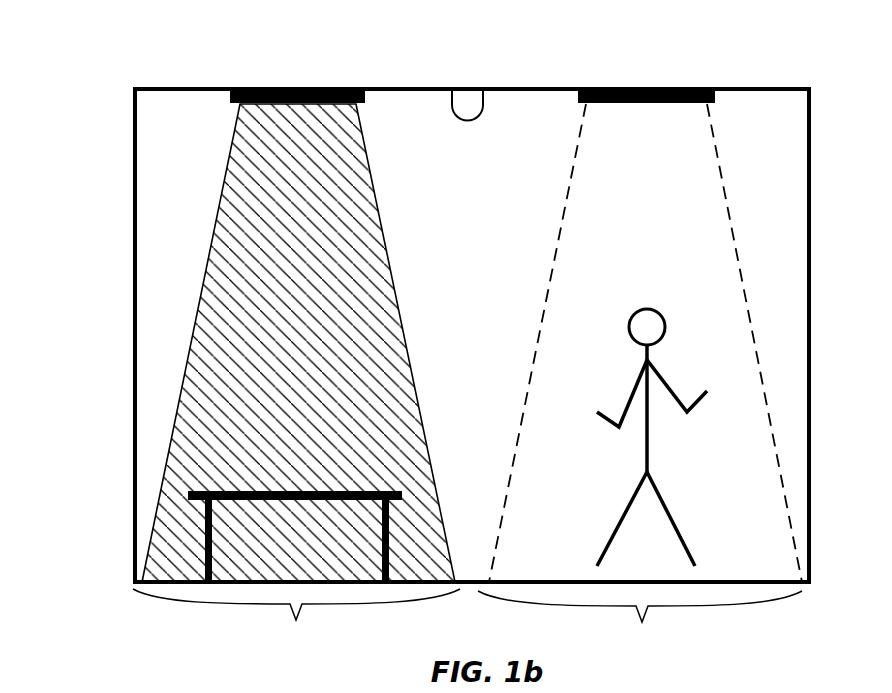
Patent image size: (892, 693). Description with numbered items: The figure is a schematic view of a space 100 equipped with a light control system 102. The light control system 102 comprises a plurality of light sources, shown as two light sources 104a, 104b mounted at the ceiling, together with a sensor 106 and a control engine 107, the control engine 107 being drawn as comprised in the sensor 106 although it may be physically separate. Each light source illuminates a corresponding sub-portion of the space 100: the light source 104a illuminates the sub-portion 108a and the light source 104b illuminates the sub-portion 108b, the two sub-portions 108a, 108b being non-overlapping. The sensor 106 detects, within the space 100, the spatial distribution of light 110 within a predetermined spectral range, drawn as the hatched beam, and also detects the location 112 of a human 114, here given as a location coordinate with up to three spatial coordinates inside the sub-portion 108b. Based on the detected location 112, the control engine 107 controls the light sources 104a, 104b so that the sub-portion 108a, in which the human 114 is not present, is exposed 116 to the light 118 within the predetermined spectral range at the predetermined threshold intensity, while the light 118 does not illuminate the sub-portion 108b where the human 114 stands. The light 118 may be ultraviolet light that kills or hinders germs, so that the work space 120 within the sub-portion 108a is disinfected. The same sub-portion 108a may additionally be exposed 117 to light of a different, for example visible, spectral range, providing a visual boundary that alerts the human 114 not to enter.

The space 100 is at (133, 112).
The light control system 102 is at (180, 143).
The light source 104a is at (278, 88).
The light source 104b is at (655, 88).
The sensor 106 is at (460, 98).
The control engine 107 is at (470, 98).
The sub-portion 108a is at (296, 619).
The sub-portion 108b is at (640, 376).
The spatial distribution of light 110 is at (375, 285).
The location 112 is at (653, 559).
The human 114 is at (665, 320).
The exposure 116 is at (227, 272).
The additional exposure 117 is at (227, 320).
The light 118 is at (218, 375).
The work space 120 is at (397, 492).